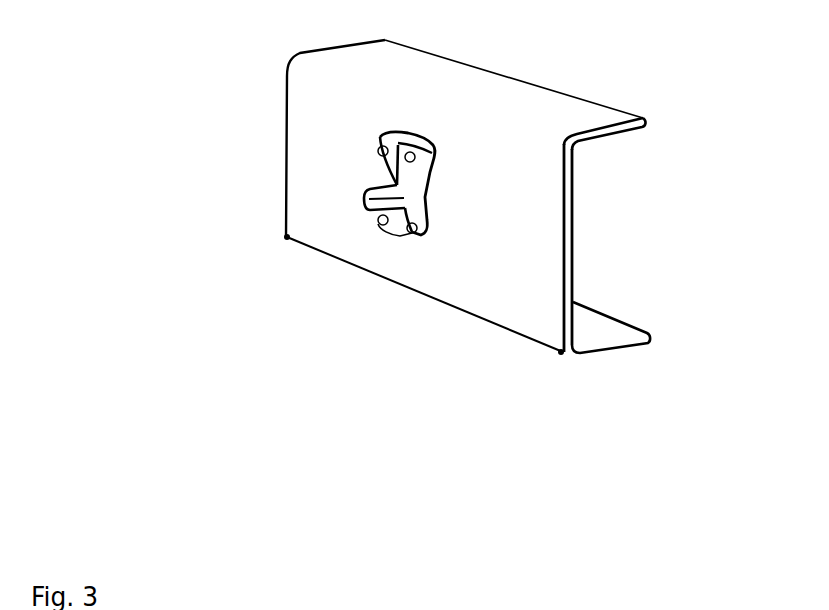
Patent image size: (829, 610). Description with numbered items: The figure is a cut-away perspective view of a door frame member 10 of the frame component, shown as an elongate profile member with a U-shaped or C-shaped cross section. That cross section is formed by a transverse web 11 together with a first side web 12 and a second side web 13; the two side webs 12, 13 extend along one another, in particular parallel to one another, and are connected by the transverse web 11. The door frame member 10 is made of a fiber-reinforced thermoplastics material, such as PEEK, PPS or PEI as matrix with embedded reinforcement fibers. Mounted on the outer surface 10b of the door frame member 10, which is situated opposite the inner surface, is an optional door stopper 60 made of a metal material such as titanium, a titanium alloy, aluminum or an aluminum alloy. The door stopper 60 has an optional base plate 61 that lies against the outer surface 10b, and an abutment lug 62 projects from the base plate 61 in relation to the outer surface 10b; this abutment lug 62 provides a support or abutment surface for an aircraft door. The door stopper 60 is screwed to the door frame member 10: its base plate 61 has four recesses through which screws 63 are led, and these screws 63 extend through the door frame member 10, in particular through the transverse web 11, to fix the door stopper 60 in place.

The door frame member 10 is at (491, 242).
The outer surface 10b is at (447, 272).
The transverse web 11 is at (568, 250).
The first side web 12 is at (630, 350).
The second side web 13 is at (628, 131).
The door stopper 60 is at (393, 186).
The base plate 61 is at (440, 191).
The abutment lug 62 is at (365, 196).
The screws 63 is at (378, 147).